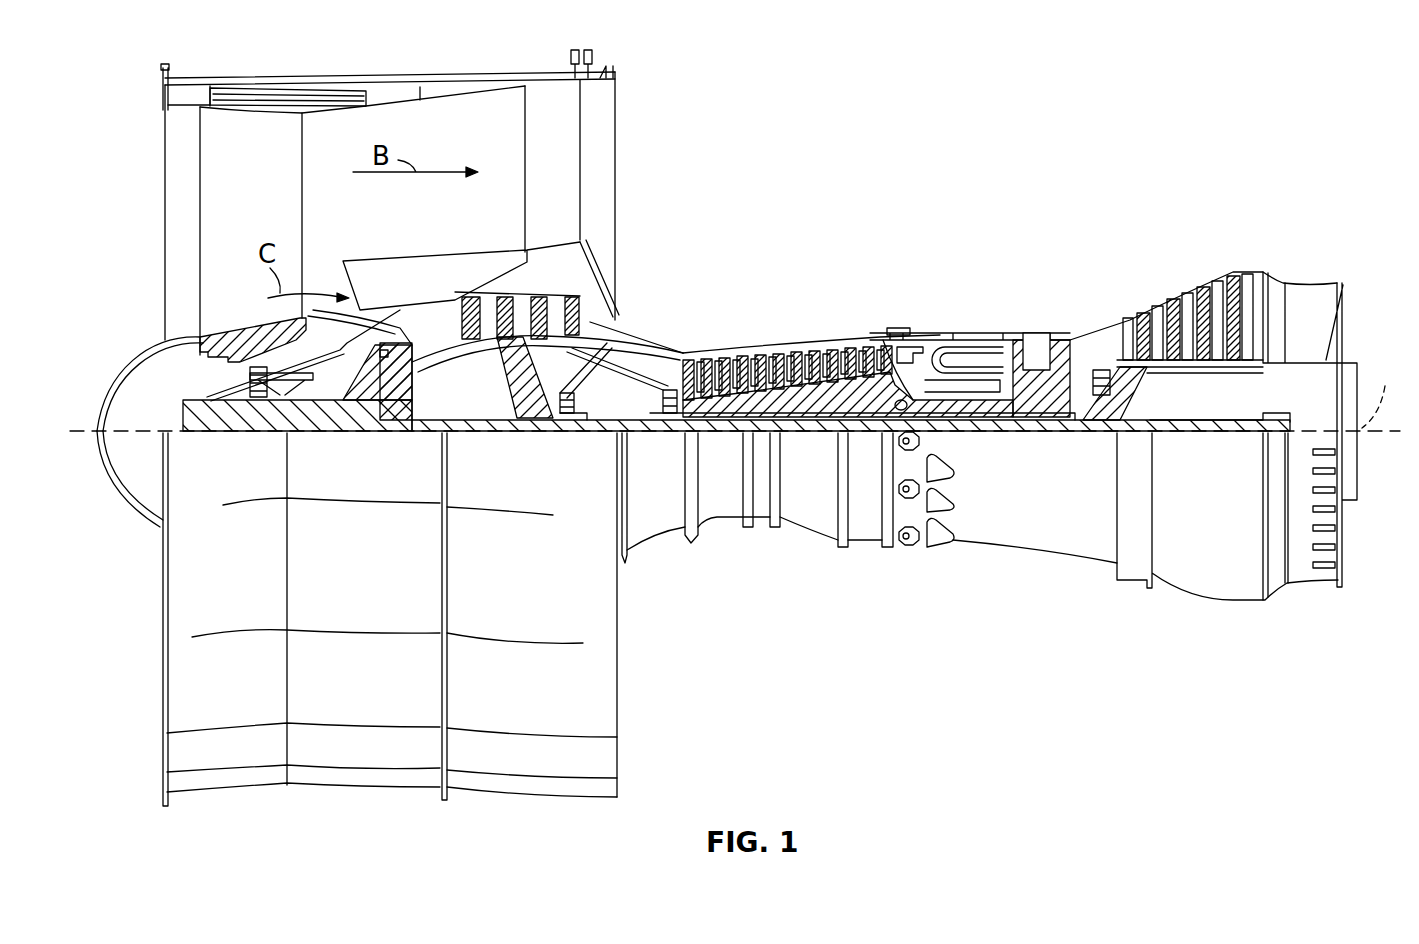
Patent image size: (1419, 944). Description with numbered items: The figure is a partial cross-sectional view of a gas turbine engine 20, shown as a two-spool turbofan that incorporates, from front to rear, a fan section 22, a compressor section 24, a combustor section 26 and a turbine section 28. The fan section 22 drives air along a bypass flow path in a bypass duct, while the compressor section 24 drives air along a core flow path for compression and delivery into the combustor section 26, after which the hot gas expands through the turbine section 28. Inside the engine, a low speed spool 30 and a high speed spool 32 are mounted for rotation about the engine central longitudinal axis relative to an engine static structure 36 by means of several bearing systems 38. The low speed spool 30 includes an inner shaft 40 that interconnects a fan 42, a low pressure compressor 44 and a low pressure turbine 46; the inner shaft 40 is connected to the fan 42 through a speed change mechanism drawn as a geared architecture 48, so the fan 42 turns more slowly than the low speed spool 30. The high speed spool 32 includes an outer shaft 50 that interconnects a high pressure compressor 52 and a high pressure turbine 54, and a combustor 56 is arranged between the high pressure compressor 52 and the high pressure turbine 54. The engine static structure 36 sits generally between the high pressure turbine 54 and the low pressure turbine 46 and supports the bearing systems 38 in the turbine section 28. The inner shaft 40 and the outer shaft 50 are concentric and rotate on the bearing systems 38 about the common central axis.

The gas turbine engine 20 is at (1170, 114).
The fan section 22 is at (289, 70).
The compressor section 24 is at (799, 300).
The combustor section 26 is at (961, 302).
The turbine section 28 is at (1099, 277).
The low speed spool 30 is at (831, 435).
The high speed spool 32 is at (880, 383).
The engine static structure 36 is at (869, 547).
The bearing systems 38 is at (262, 400).
The inner shaft 40 is at (630, 427).
The fan 42 is at (279, 204).
The low pressure compressor 44 is at (537, 317).
The low pressure turbine 46 is at (1200, 300).
The geared architecture 48 is at (390, 405).
The outer shaft 50 is at (987, 407).
The high pressure compressor 52 is at (790, 400).
The high pressure turbine 54 is at (1043, 333).
The combustor 56 is at (967, 353).